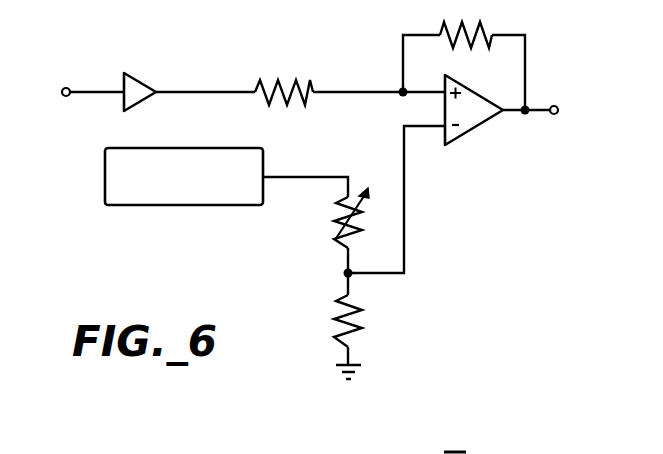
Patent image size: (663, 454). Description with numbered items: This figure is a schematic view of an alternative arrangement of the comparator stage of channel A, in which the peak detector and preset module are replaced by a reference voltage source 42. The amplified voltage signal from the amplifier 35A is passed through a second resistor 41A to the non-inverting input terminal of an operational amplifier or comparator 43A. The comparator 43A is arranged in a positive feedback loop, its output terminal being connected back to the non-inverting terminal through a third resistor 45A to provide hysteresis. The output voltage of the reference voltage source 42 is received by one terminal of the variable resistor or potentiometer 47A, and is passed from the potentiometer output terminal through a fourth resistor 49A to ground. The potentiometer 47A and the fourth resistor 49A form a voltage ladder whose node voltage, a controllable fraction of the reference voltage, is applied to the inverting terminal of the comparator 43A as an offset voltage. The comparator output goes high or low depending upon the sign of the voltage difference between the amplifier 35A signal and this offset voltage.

The amplifier 35A is at (147, 83).
The second resistor 41A is at (295, 81).
The reference voltage source 42 is at (227, 148).
The comparator 43A is at (455, 138).
The third resistor 45A is at (470, 30).
The potentiometer 47A is at (338, 217).
The fourth resistor 49A is at (338, 295).